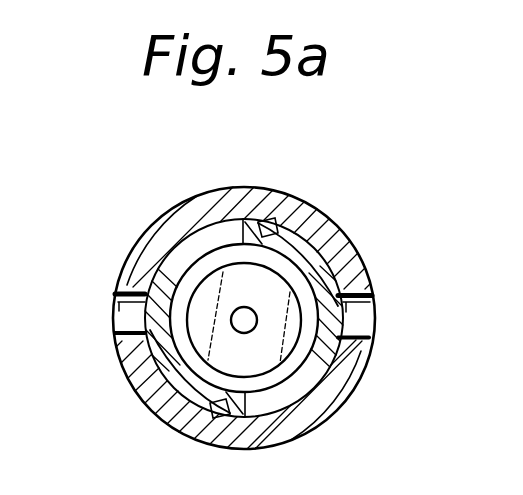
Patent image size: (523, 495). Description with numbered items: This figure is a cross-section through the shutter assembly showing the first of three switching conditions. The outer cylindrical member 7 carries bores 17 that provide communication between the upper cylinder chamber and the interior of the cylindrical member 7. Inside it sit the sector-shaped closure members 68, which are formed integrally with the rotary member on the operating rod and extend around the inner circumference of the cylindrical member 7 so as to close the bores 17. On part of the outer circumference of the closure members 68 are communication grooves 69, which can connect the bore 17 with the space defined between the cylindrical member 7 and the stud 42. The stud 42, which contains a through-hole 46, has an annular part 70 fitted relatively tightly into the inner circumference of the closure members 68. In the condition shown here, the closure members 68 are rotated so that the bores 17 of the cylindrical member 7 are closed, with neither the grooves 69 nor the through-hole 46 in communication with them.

The cylindrical member 7 is at (328, 231).
The bore 17 is at (116, 292).
The stud 42 is at (277, 345).
The through-hole 46 is at (248, 331).
The closure members 68 is at (348, 267).
The communication grooves 69 is at (297, 197).
The annular part 70 is at (278, 375).